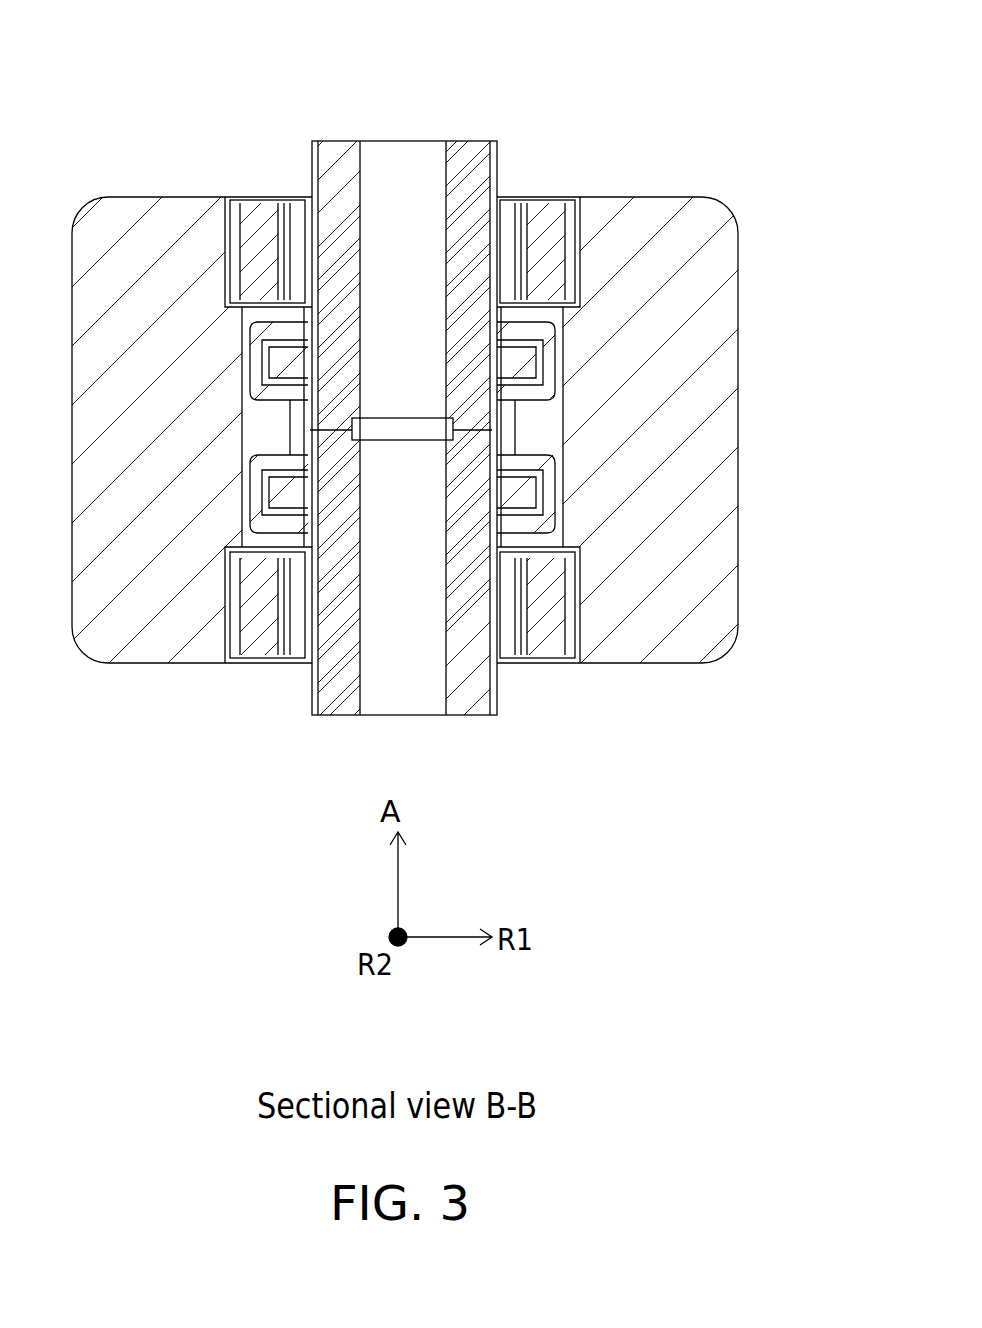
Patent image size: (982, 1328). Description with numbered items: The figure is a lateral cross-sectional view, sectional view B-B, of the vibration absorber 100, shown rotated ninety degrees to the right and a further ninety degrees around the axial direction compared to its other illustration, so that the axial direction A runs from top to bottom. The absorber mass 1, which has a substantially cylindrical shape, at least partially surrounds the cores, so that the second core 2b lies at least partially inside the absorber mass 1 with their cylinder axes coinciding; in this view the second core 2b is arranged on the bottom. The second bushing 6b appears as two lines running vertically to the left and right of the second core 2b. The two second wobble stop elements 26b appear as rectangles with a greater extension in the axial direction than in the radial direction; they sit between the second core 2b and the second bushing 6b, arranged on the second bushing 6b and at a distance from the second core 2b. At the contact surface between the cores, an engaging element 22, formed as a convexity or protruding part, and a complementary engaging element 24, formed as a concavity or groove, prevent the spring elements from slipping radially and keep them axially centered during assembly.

The vibration absorber 100 is at (420, 53).
The absorber mass 1 is at (690, 635).
The second core 2b is at (467, 635).
The second bushing 6b is at (577, 640).
The second wobble stop elements 26b is at (263, 642).
The engaging element 22 is at (327, 284).
The complementary engaging element 24 is at (398, 417).